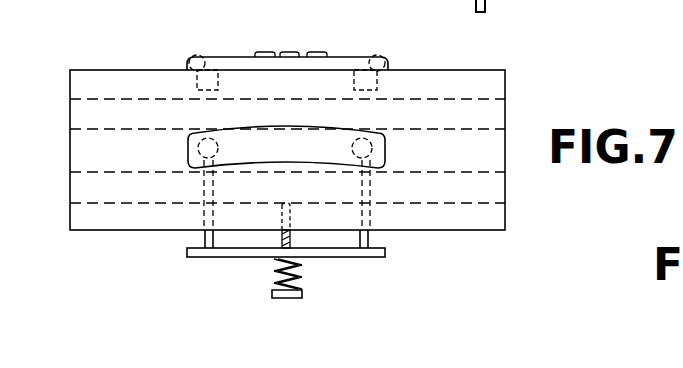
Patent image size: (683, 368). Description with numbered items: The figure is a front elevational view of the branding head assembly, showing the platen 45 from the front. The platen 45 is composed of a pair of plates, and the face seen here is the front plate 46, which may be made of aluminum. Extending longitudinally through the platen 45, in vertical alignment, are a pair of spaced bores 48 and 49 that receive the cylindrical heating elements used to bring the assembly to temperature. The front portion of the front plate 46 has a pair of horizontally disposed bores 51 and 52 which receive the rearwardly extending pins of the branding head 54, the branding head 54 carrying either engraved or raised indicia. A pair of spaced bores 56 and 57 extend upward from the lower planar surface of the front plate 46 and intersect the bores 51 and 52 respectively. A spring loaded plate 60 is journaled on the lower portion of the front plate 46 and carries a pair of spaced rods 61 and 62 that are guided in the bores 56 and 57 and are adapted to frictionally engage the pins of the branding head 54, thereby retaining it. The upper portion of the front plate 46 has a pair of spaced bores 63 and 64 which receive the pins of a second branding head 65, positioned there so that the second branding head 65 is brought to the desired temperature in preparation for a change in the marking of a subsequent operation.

The platen 45 is at (534, 113).
The front plate 46 is at (465, 78).
The bore 48 is at (103, 128).
The bore 49 is at (106, 172).
The bore 51 is at (199, 150).
The bore 52 is at (372, 151).
The branding head 54 is at (235, 140).
The bore 56 is at (206, 186).
The bore 57 is at (370, 196).
The spring loaded plate 60 is at (317, 255).
The rod 61 is at (200, 242).
The rod 62 is at (370, 240).
The bore 63 is at (190, 58).
The bore 64 is at (381, 55).
The second branding head 65 is at (247, 62).